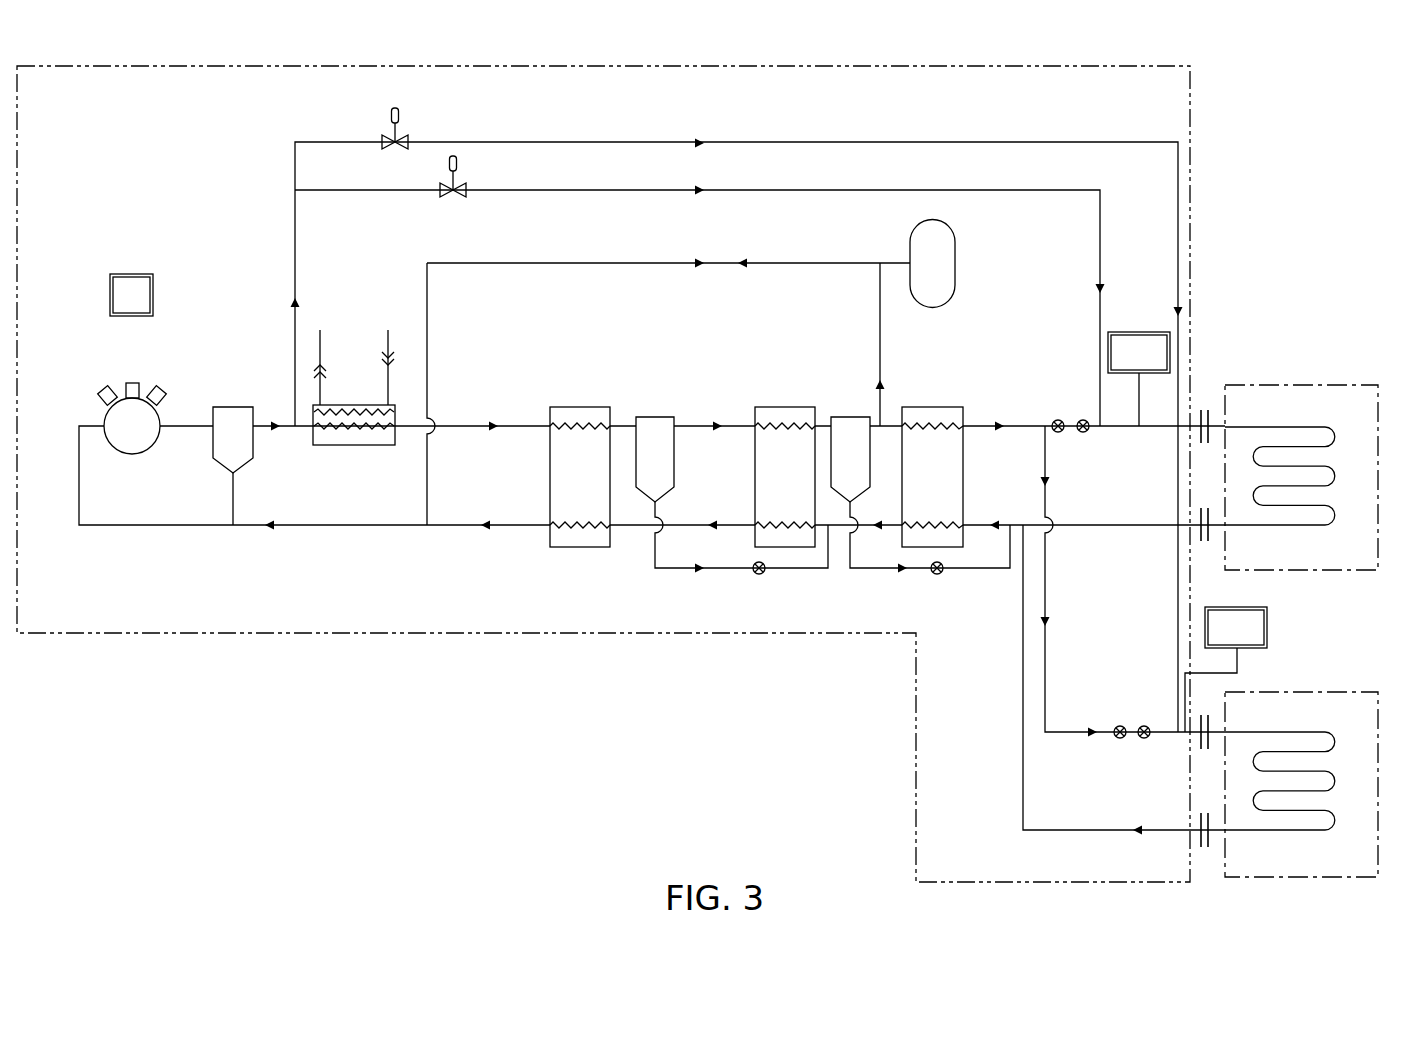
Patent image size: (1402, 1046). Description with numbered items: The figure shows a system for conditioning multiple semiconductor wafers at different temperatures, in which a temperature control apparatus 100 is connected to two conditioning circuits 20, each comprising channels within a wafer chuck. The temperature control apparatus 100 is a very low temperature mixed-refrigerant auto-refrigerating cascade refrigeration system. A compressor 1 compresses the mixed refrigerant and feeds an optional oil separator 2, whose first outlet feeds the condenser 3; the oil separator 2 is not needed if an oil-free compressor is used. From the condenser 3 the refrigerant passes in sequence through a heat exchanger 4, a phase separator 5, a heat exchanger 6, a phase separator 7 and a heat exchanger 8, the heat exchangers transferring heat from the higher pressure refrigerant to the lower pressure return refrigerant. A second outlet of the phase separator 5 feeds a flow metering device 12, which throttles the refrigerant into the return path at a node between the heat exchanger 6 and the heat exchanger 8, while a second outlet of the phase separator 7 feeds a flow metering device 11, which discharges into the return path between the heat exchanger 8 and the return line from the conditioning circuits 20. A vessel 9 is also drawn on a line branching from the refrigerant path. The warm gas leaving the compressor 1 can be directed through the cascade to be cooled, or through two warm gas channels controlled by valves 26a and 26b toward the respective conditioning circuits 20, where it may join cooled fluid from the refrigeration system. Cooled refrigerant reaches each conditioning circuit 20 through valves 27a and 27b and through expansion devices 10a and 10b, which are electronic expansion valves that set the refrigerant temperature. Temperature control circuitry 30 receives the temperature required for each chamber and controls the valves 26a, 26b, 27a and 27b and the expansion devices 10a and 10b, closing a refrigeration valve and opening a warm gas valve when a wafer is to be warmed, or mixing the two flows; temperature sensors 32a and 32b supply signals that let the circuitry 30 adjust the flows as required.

The temperature control apparatus 100 is at (731, 65).
The compressor 1 is at (141, 439).
The oil separator 2 is at (233, 406).
The condenser 3 is at (347, 404).
The heat exchanger 4 is at (570, 405).
The phase separator 5 is at (647, 416).
The heat exchanger 6 is at (782, 405).
The phase separator 7 is at (855, 416).
The heat exchanger 8 is at (940, 405).
The buffer tank 9 is at (956, 261).
The flow metering device 11 is at (942, 577).
The flow metering device 12 is at (764, 577).
The valve 26a is at (392, 114).
The valve 26b is at (457, 163).
The valve 27a is at (1055, 420).
The valve 27b is at (1118, 726).
The expansion device 10a is at (1081, 420).
The expansion device 10b is at (1143, 726).
The temperature control circuitry 30 is at (146, 308).
The temperature sensor 32a is at (1163, 366).
The temperature sensor 32b is at (1260, 641).
The conditioning circuit 20 is at (1333, 572).